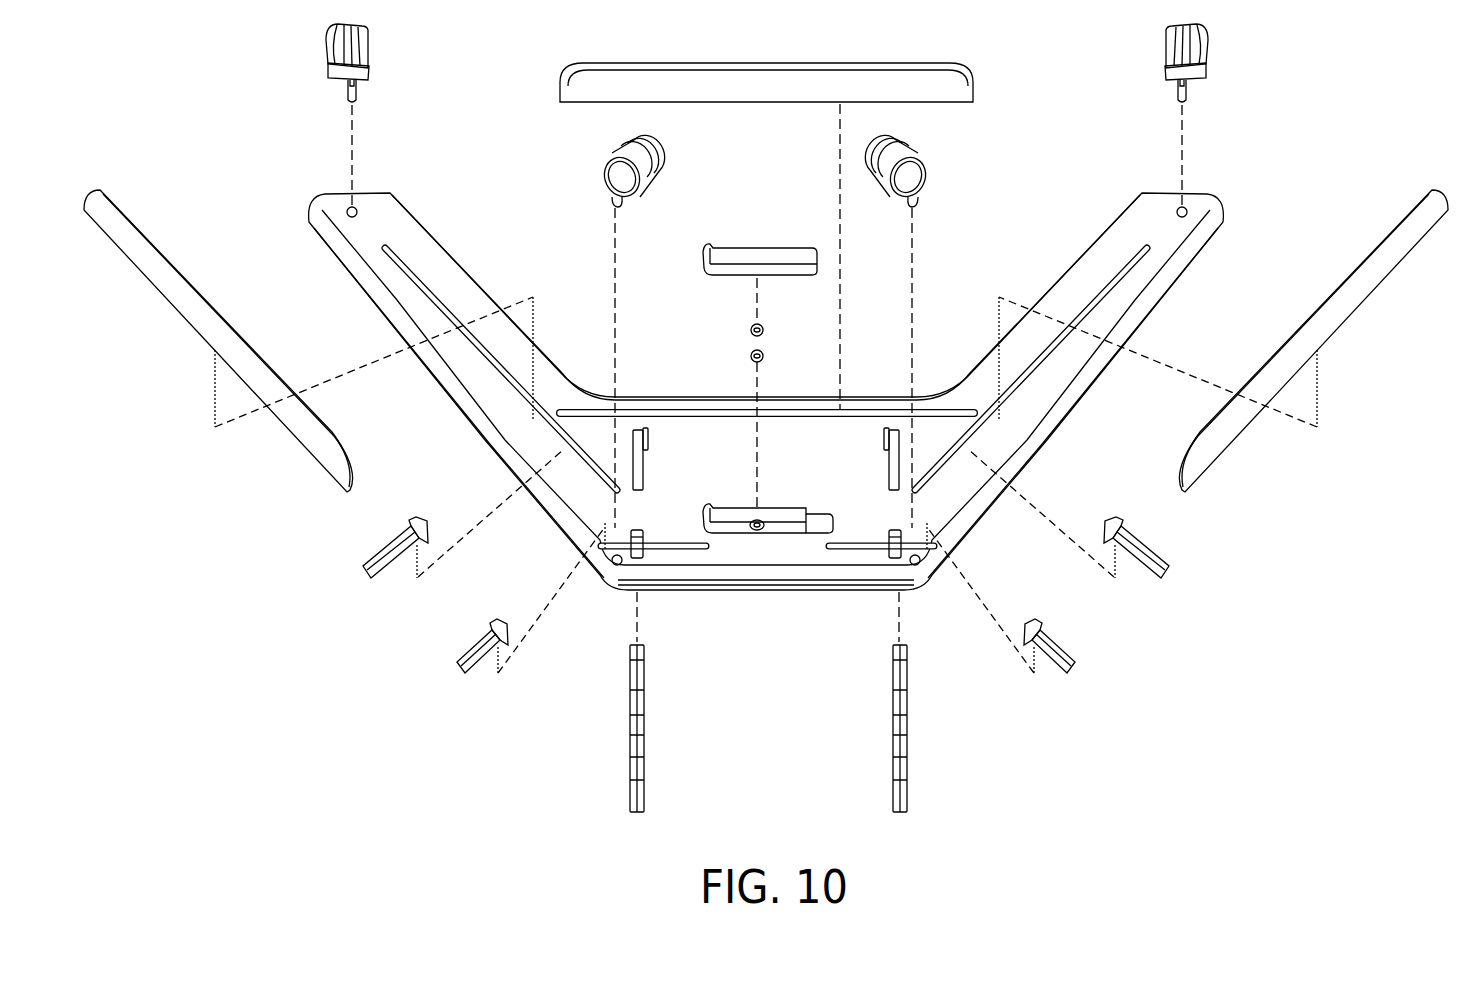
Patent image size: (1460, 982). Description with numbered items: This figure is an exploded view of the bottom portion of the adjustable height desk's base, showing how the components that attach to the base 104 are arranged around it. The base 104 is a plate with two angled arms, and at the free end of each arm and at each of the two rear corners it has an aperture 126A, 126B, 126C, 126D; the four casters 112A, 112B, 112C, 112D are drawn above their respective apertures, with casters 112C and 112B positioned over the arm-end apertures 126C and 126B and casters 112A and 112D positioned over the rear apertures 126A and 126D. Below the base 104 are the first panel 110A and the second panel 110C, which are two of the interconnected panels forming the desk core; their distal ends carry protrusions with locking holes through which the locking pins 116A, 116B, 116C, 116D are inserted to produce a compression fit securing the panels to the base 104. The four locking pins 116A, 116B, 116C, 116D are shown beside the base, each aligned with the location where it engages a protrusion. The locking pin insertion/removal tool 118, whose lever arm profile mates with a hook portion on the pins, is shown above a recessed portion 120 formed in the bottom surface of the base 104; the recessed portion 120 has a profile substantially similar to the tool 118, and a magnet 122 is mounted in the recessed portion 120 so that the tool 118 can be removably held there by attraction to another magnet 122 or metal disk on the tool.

The base 104 is at (762, 596).
The first panel 110A is at (630, 778).
The second panel 110C is at (900, 770).
The caster 112A is at (648, 162).
The caster 112B is at (1200, 45).
The caster 112C is at (364, 45).
The caster 112D is at (930, 165).
The locking pin 116A is at (461, 668).
The locking pin 116B is at (1170, 573).
The locking pin 116C is at (363, 573).
The locking pin 116D is at (1078, 660).
The locking pin insertion/removal tool 118 is at (802, 262).
The recessed portion 120 is at (785, 522).
The magnet 122 is at (752, 329).
The aperture 126A is at (612, 566).
The aperture 126B is at (1186, 208).
The aperture 126C is at (348, 208).
The aperture 126D is at (919, 566).